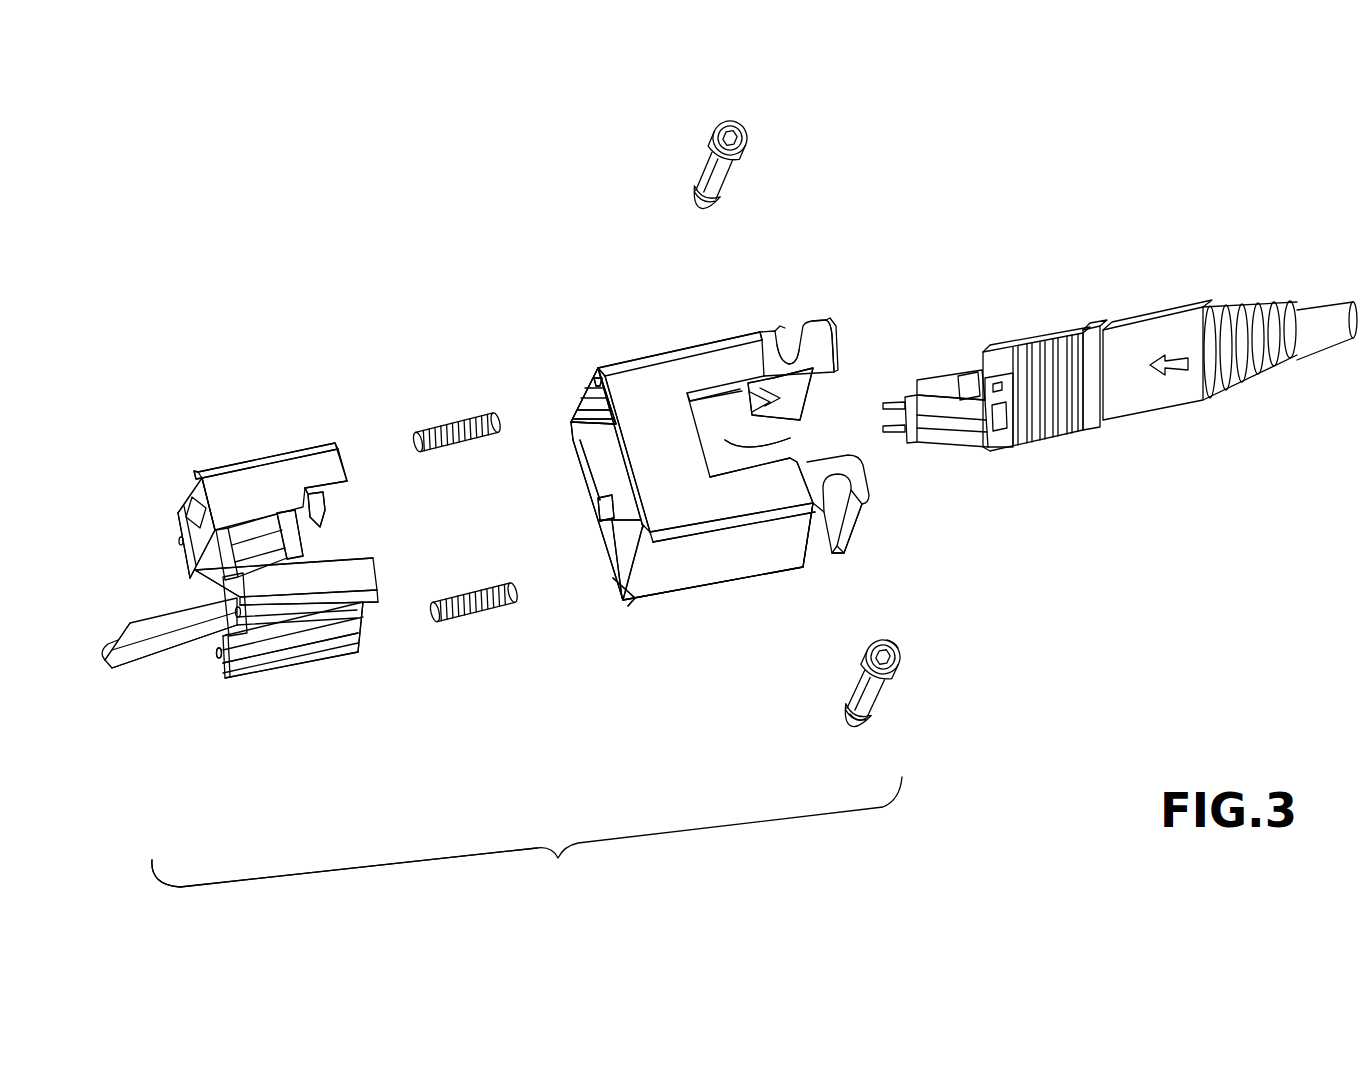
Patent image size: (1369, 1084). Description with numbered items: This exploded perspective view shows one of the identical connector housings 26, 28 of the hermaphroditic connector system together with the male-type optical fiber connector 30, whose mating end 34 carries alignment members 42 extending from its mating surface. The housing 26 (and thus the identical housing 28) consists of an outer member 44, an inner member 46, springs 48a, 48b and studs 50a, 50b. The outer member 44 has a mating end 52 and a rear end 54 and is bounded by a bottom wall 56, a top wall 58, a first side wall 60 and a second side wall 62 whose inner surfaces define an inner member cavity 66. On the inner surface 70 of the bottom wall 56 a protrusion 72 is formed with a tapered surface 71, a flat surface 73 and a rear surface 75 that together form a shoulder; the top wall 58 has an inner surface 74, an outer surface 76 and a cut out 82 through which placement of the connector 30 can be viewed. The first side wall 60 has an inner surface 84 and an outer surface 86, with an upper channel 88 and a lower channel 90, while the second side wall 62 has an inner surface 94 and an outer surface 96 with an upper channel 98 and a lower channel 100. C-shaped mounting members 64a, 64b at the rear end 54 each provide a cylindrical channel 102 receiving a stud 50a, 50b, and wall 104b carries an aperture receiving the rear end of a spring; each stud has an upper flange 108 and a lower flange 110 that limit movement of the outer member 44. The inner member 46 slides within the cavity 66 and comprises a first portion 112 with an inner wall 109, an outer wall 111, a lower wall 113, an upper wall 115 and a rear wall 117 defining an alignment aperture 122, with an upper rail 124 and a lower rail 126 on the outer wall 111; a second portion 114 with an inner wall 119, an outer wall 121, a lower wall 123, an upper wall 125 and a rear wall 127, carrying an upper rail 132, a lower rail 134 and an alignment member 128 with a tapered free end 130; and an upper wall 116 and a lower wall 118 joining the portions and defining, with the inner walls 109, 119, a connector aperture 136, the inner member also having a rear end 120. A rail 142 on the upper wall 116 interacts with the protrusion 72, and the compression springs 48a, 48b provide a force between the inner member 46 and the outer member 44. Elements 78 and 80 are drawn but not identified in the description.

The first connector housing 26 is at (527, 837).
The second housing 28 is at (344, 867).
The male-type optical fiber connector 30 is at (1120, 398).
The mating end 34 is at (917, 443).
The alignment members 42 is at (898, 402).
The outer member 44 is at (744, 575).
The inner member 46 is at (240, 478).
The spring 48a is at (456, 615).
The spring 48b is at (428, 430).
The stud 50a is at (875, 688).
The stud 50b is at (703, 182).
The mating end 52 is at (622, 606).
The rear end 54 is at (864, 468).
The bottom wall 56 is at (600, 466).
The top wall 58 is at (695, 372).
The first side wall 60 is at (588, 400).
The second side wall 62 is at (766, 560).
The mounting member 64a is at (840, 550).
The mounting member 64b is at (814, 372).
The inner member cavity 66 is at (615, 555).
The inner surface 70 is at (597, 511).
The tapered surface 71 is at (612, 524).
The protrusion 72 is at (596, 505).
The flat surface 73 is at (618, 478).
The inner surface 74 is at (640, 565).
The rear surface 75 is at (616, 502).
The outer surface 76 is at (731, 495).
The corner edge 78 is at (608, 380).
The upper hook 80 is at (768, 338).
The cut out 82 is at (742, 446).
The inner surface 84 is at (582, 412).
The outer surface 86 is at (630, 355).
The upper channel 88 is at (596, 388).
The lower channel 90 is at (574, 426).
The inner surface 94 is at (616, 603).
The outer surface 96 is at (718, 551).
The upper channel 98 is at (655, 577).
The lower channel 100 is at (638, 602).
The cylindrically-shaped channel 102 is at (788, 360).
The wall 104b is at (770, 418).
The upper flange 108 is at (903, 650).
The inner wall 109 is at (190, 565).
The lower flange 110 is at (862, 722).
The outer wall 111 is at (198, 482).
The first portion 112 is at (196, 472).
The lower wall 113 is at (182, 540).
The second portion 114 is at (292, 645).
The upper wall 115 is at (215, 470).
The upper wall 116 is at (312, 538).
The rear wall 117 is at (340, 458).
The lower wall 118 is at (225, 585).
The inner wall 119 is at (237, 578).
The rear end 120 is at (340, 472).
The outer wall 121 is at (350, 640).
The alignment aperture 122 is at (188, 502).
The lower wall 123 is at (218, 660).
The upper rail 124 is at (264, 460).
The upper wall 125 is at (320, 650).
The lower rail 126 is at (178, 518).
The rear wall 127 is at (377, 568).
The alignment member 128 is at (162, 650).
The tapered free end 130 is at (128, 628).
The upper rail 132 is at (362, 615).
The lower rail 134 is at (250, 670).
The connector aperture 136 is at (140, 640).
The rail 142 is at (308, 560).